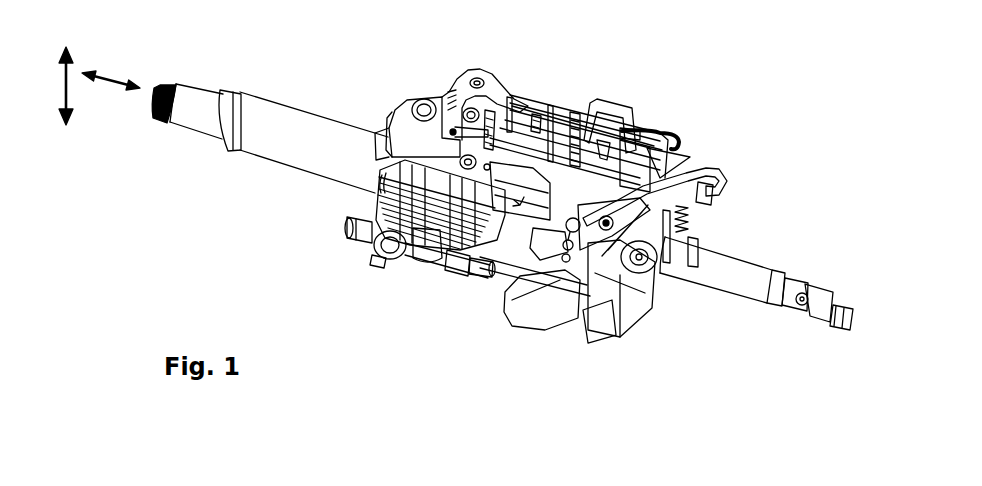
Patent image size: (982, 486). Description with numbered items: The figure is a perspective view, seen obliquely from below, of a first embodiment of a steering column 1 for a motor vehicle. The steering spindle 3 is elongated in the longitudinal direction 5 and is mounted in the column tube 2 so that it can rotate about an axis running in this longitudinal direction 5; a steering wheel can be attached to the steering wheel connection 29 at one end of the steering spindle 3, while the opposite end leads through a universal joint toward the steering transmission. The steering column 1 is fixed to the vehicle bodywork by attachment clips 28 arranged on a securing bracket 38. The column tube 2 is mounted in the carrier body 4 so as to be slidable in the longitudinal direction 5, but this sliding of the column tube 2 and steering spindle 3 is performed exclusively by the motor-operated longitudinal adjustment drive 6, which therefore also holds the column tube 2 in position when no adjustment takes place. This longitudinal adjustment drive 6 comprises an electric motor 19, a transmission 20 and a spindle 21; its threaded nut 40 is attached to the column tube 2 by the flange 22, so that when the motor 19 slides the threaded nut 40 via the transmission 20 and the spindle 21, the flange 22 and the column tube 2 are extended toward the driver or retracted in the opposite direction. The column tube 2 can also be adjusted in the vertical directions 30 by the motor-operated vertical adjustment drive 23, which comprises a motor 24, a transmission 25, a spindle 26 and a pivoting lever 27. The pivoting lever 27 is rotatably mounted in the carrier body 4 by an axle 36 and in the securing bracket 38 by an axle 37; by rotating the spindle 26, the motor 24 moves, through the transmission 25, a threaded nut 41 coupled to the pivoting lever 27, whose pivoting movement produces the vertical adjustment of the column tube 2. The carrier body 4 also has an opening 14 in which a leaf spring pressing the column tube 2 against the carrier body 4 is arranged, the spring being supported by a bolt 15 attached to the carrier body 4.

The steering column 1 is at (416, 79).
The column tube 2 is at (260, 113).
The steering spindle 3 is at (197, 120).
The carrier body 4 is at (533, 138).
The longitudinal direction 5 is at (113, 75).
The motor-operated longitudinal adjustment drive 6 is at (538, 338).
The opening 14 is at (368, 205).
The bolt 15 is at (343, 235).
The electric motor 19 is at (547, 300).
The transmission 20 is at (682, 172).
The spindle 21 is at (641, 120).
The flange 22 is at (477, 272).
The motor-operated vertical adjustment drive 23 is at (645, 323).
The motor 24 is at (613, 300).
The transmission 25 is at (612, 342).
The spindle 26 is at (413, 243).
The pivoting lever 27 is at (367, 243).
The attachment clips 28 is at (485, 68).
The steering wheel connection 29 is at (175, 87).
The vertical directions 30 is at (70, 97).
The axle 36 is at (432, 102).
The axle 37 is at (500, 103).
The securing bracket 38 is at (553, 107).
The threaded nut 40 is at (588, 128).
The threaded nut 41 is at (378, 258).